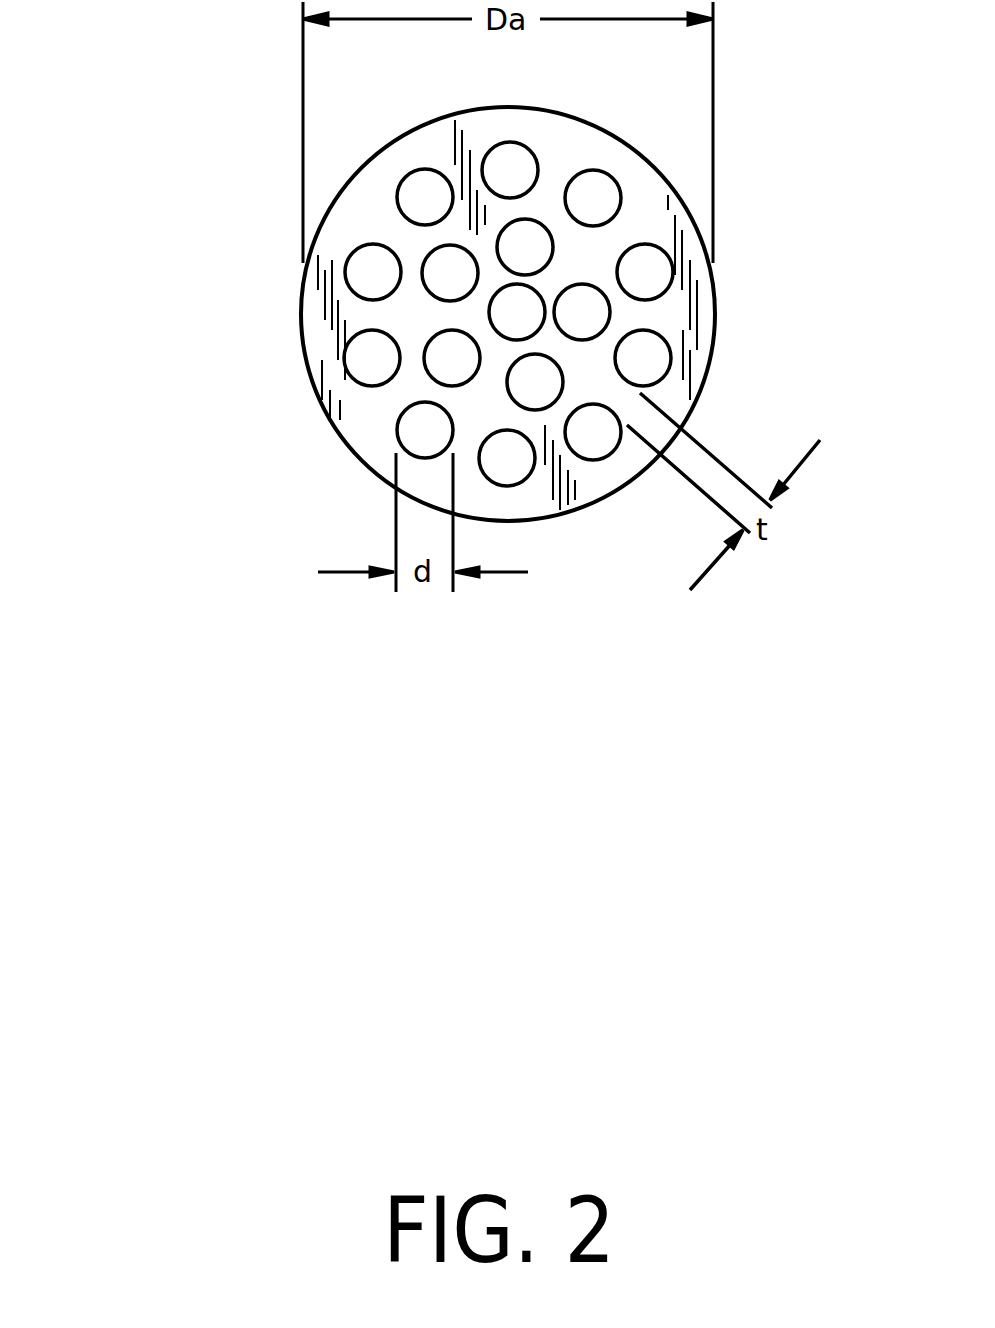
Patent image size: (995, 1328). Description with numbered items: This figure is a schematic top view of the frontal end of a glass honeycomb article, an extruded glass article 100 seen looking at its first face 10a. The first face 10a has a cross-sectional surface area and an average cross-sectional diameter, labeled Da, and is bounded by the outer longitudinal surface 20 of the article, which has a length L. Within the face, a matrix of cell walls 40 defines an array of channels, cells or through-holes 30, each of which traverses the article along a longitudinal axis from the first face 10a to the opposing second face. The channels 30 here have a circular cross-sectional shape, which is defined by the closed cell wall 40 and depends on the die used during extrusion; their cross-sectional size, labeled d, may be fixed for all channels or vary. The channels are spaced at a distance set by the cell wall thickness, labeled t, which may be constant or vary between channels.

The extruded glass article 100 is at (478, 417).
The first face 10a is at (683, 298).
The outer longitudinal surface 20 is at (320, 396).
The through-holes 30 is at (365, 275).
The cell walls 40 is at (672, 347).